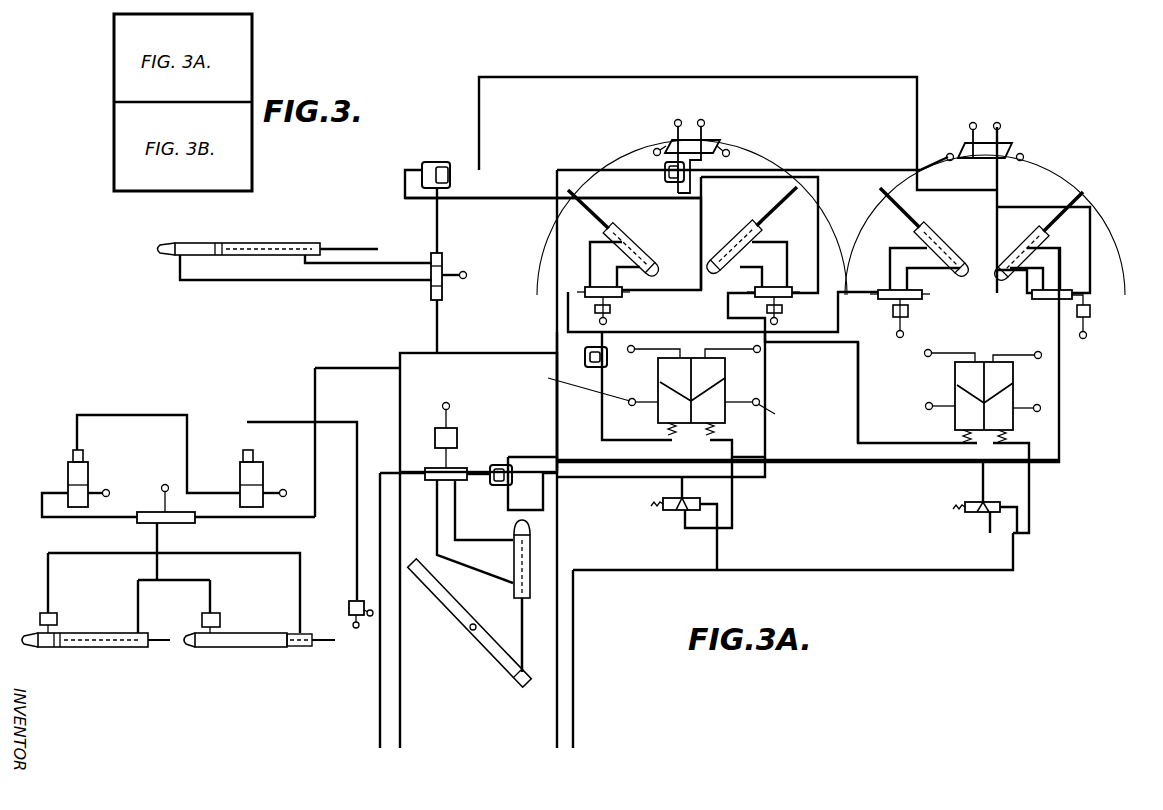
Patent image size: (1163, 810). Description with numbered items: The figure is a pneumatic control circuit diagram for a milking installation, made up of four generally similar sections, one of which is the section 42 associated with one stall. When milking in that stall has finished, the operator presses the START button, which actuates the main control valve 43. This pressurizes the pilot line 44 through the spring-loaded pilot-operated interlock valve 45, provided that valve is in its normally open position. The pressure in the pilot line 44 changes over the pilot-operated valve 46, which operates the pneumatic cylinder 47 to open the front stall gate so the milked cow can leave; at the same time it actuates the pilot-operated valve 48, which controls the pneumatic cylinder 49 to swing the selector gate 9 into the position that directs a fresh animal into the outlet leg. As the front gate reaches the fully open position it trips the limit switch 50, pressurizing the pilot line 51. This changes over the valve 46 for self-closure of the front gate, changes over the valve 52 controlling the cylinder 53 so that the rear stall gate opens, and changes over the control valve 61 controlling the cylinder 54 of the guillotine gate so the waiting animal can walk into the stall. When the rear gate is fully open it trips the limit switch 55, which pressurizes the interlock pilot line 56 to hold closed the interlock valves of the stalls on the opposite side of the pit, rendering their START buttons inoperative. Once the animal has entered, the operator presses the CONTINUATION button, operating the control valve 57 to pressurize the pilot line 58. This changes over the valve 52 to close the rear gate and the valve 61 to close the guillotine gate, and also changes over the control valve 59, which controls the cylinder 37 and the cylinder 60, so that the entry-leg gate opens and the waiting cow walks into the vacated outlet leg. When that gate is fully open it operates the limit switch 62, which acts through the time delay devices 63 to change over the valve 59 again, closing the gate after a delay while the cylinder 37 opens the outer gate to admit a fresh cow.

The selector gate 9 is at (442, 594).
The cylinder 37 is at (95, 609).
The section 42 is at (768, 155).
The main control valve 43 is at (714, 372).
The pilot line 44 is at (767, 394).
The interlock valve 45 is at (673, 512).
The pilot-operated valve 46 is at (793, 289).
The pneumatic cylinder 47 is at (748, 229).
The pilot-operated valve 48 is at (462, 470).
The pneumatic cylinder 49 is at (530, 568).
The limit switch 50 is at (713, 141).
The pilot line 51 is at (527, 198).
The valve 52 is at (587, 287).
The cylinder 53 is at (640, 243).
The cylinder 54 is at (298, 242).
The limit switch 55 is at (668, 138).
The interlock pilot line 56 is at (557, 404).
The control valve 57 is at (663, 379).
The pilot line 58 is at (491, 353).
The control valve 59 is at (148, 512).
The cylinder 60 is at (253, 636).
The control valve 61 is at (430, 262).
The limit switch 62 is at (353, 602).
The time delay devices 63 is at (92, 478).